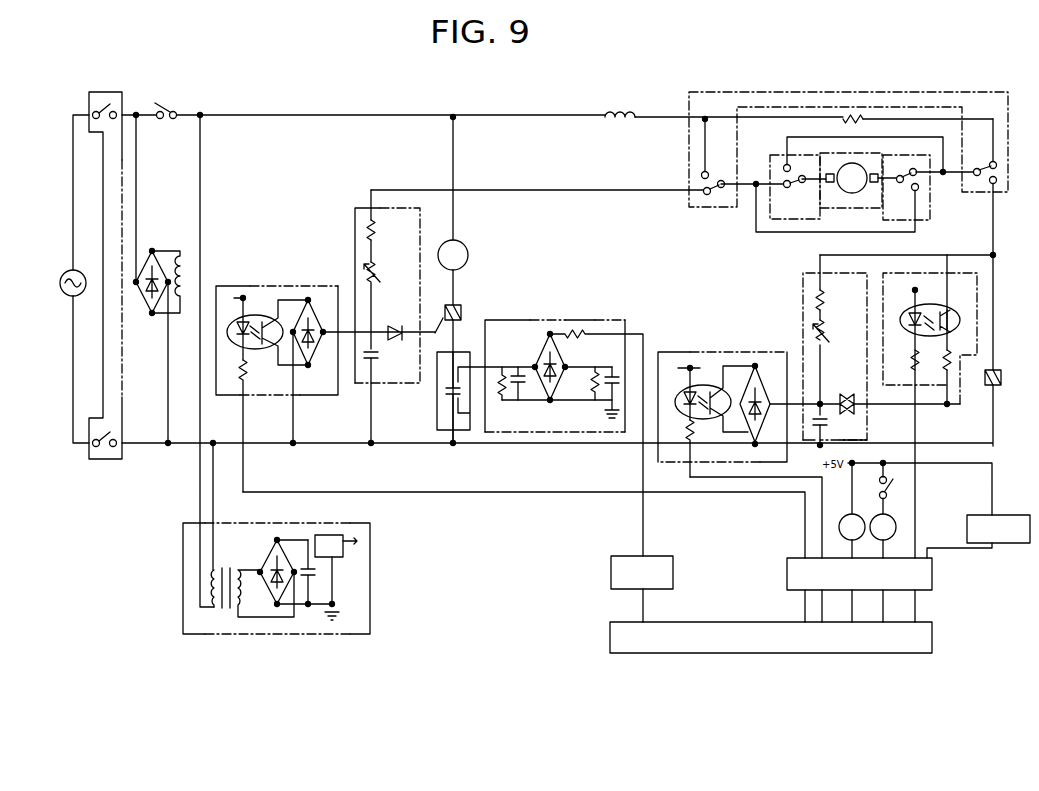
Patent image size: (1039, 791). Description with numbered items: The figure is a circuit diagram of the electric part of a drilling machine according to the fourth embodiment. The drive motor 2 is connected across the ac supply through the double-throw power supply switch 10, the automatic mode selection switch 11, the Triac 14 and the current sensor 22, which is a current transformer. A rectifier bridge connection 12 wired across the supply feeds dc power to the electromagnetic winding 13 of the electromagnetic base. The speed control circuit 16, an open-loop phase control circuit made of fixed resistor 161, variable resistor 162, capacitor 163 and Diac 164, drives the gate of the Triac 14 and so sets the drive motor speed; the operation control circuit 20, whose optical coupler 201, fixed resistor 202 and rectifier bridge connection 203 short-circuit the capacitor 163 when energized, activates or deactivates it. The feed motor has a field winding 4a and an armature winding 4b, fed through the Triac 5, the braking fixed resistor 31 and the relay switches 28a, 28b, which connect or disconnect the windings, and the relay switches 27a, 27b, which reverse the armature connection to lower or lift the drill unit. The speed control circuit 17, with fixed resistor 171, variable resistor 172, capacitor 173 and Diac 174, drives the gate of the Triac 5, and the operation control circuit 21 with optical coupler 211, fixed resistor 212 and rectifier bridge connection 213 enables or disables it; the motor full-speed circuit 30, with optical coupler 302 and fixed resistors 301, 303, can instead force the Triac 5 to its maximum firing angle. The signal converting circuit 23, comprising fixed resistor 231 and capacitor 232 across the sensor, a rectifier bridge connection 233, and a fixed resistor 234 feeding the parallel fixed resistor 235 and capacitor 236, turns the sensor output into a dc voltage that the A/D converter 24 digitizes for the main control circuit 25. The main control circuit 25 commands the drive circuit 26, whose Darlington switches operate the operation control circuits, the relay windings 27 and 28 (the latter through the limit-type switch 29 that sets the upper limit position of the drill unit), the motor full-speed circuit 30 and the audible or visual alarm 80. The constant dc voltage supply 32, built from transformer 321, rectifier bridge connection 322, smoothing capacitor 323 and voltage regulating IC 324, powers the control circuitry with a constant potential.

The drive motor 2 is at (468, 253).
The field winding 4a is at (620, 124).
The armature winding 4b is at (852, 170).
The Triac 5 is at (996, 386).
The power supply switch 10 is at (105, 462).
The automatic mode selection switch 11 is at (170, 119).
The rectifier bridge connection 12 is at (150, 315).
The electromagnetic winding 13 is at (176, 251).
The Triac 14 is at (458, 302).
The speed control circuit 16 is at (374, 305).
The fixed resistor 161 is at (366, 230).
The variable resistor 162 is at (366, 272).
The capacitor 163 is at (367, 362).
The Diac 164 is at (397, 342).
The speed control circuit 17 is at (854, 338).
The fixed resistor 171 is at (814, 300).
The variable resistor 172 is at (814, 330).
The capacitor 173 is at (828, 425).
The Diac 174 is at (848, 392).
The operation control circuit 20 is at (271, 359).
The optical coupler 201 is at (258, 314).
The fixed resistor 202 is at (240, 378).
The rectifier bridge connection 203 is at (318, 350).
The operation control circuit 21 is at (717, 411).
The optical coupler 211 is at (706, 386).
The fixed resistor 212 is at (688, 440).
The rectifier bridge connection 213 is at (766, 420).
The current sensor 22 is at (445, 430).
The signal converting circuit 23 is at (556, 408).
The fixed resistor 231 is at (500, 398).
The capacitor 232 is at (522, 400).
The rectifier bridge connection 233 is at (548, 336).
The fixed resistor 234 is at (580, 330).
The fixed resistor 235 is at (592, 396).
The capacitor 236 is at (614, 392).
The A/D converter 24 is at (609, 575).
The main control circuit 25 is at (608, 640).
The drive circuit 26 is at (933, 577).
The relay winding 27 is at (838, 530).
The relay switch 27a is at (793, 186).
The relay switch 27b is at (905, 186).
The relay winding 28 is at (896, 527).
The relay switch 28a is at (712, 196).
The relay switch 28b is at (980, 176).
The switch 29 is at (895, 490).
The motor full-speed circuit 30 is at (938, 339).
The fixed resistor 301 is at (920, 366).
The optical coupler 302 is at (930, 302).
The fixed resistor 303 is at (952, 368).
The fixed resistor 31 is at (848, 152).
The constant dc voltage supply 32 is at (305, 589).
The transformer 321 is at (225, 618).
The rectifier bridge connection 322 is at (284, 592).
The smoothing capacitor 323 is at (316, 576).
The voltage regulating IC 324 is at (340, 535).
The alarm 80 is at (996, 513).